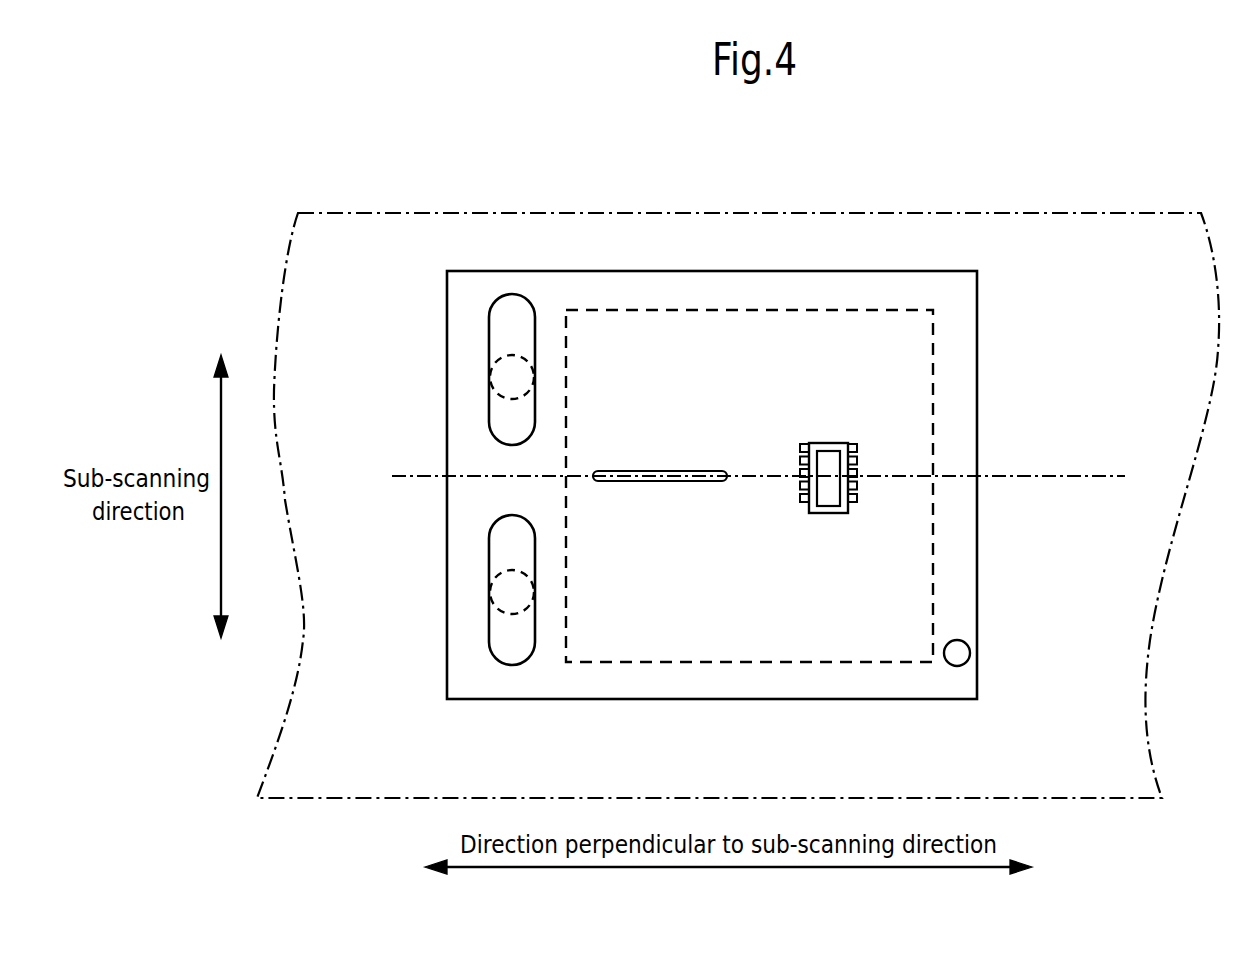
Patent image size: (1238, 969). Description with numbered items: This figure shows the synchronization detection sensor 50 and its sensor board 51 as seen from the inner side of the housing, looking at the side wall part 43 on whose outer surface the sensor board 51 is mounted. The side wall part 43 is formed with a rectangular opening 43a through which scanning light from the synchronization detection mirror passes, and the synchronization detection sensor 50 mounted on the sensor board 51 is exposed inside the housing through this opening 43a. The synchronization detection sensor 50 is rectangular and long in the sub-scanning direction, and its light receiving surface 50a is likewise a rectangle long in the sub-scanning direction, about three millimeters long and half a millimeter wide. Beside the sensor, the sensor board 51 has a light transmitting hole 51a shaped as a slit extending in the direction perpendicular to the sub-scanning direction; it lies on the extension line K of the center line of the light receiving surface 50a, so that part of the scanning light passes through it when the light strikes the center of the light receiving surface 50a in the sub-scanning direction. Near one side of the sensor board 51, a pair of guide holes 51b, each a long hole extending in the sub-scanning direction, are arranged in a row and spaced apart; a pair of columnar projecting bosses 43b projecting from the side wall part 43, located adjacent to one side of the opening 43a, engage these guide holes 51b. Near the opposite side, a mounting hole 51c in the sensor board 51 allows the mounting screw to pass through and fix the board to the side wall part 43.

The side wall part 43 is at (985, 212).
The rectangular opening 43a is at (933, 348).
The projecting bosses 43b is at (498, 402).
The synchronization detection sensor 50 is at (830, 443).
The light receiving surface 50a is at (830, 497).
The sensor board 51 is at (978, 305).
The light transmitting hole 51a is at (658, 481).
The guide holes 51b is at (490, 320).
The mounting hole 51c is at (966, 644).
The extension line of center line K is at (1003, 473).